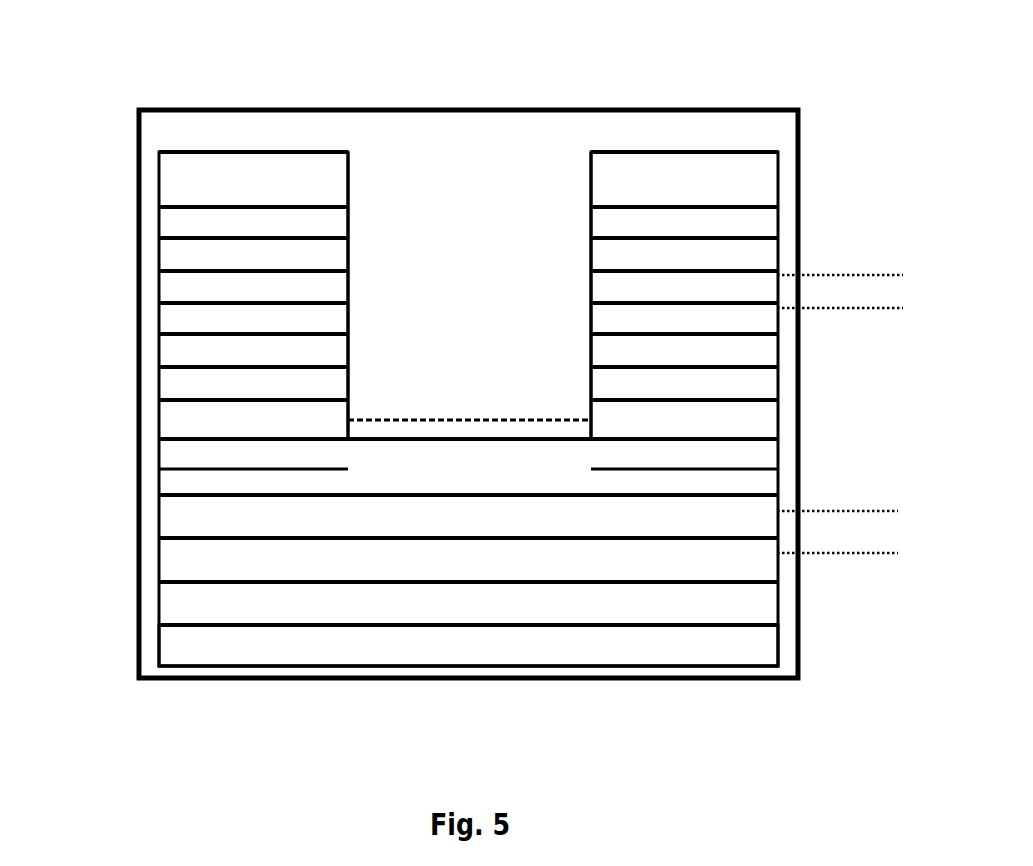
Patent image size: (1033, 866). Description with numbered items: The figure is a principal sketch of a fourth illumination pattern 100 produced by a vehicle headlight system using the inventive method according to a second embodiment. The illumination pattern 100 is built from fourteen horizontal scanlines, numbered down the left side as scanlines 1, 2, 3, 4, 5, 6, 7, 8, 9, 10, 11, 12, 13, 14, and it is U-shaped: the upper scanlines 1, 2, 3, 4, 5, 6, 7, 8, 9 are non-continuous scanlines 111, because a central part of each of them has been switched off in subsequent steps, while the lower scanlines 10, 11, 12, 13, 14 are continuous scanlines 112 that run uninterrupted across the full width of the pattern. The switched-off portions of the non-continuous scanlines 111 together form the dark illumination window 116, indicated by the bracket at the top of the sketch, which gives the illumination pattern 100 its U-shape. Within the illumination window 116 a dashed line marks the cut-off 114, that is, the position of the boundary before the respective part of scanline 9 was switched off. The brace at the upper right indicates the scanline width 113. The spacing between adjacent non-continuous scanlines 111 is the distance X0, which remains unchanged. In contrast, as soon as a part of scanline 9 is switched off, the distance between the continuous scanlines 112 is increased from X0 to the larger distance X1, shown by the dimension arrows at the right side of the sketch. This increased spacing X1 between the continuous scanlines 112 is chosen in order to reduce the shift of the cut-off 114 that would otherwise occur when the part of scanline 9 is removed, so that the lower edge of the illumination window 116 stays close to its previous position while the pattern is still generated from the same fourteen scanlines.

The illumination pattern 100 is at (126, 77).
The non-continuous scanlines 111 is at (713, 150).
The continuous scanlines 112 is at (780, 656).
The scanline width 113 is at (815, 150).
The cut-off 114 is at (434, 420).
The illumination window 116 is at (358, 85).
The distance between scanlines X0 is at (900, 280).
The increased distance between continuous scanlines X1 is at (895, 517).
The scanline 1 is at (435, 148).
The scanline 2 is at (435, 189).
The scanline 3 is at (435, 223).
The scanline 4 is at (435, 261).
The scanline 5 is at (435, 298).
The scanline 6 is at (435, 336).
The scanline 7 is at (435, 373).
The scanline 8 is at (435, 411).
The scanline 9 is at (435, 448).
The scanline 10 is at (435, 486).
The scanline 11 is at (435, 523).
The scanline 12 is at (435, 564).
The scanline 13 is at (435, 604).
The scanline 14 is at (435, 643).